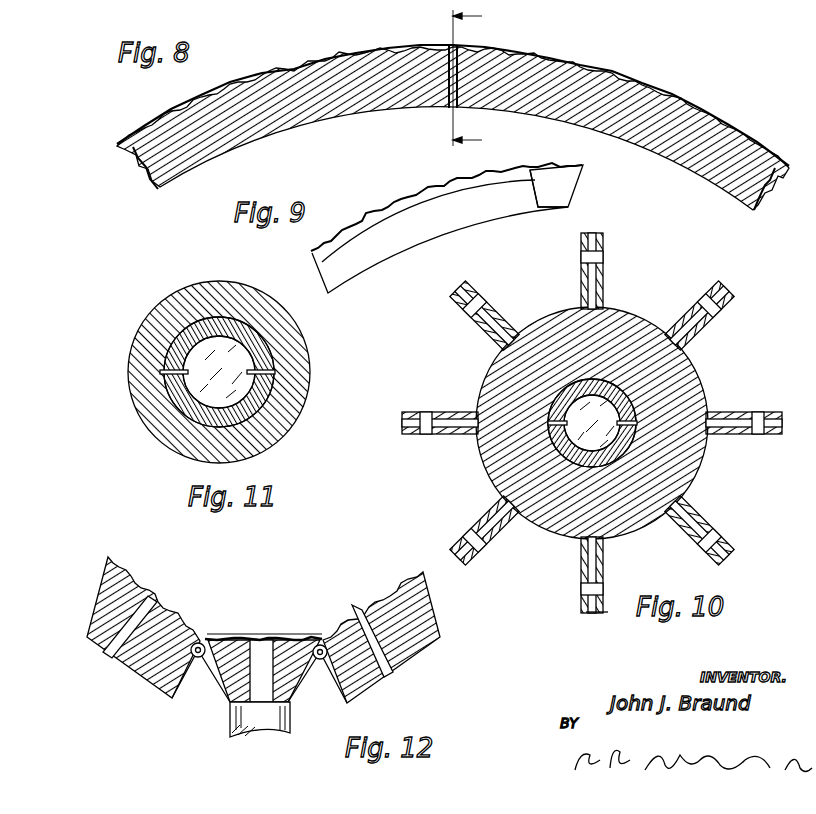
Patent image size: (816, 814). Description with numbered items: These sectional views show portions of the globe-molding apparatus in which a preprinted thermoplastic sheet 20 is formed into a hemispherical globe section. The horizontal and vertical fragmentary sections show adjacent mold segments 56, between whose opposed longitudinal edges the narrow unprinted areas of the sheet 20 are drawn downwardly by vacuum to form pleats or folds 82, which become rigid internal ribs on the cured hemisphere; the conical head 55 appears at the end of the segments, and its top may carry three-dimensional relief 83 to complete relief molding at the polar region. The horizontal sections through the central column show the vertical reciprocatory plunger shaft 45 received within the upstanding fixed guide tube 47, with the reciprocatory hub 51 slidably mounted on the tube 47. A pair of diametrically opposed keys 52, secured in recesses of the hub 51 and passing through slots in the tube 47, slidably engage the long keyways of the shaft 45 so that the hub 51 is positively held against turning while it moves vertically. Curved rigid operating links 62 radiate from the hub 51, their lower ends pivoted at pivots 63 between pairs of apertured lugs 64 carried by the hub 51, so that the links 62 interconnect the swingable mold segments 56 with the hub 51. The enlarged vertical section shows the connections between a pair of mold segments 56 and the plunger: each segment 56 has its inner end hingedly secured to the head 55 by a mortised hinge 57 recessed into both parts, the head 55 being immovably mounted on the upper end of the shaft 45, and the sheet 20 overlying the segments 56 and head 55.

In FIG. 8, the sheet of thermoplastic material 20 is at (653, 86).
In FIG. 12, the sheet of thermoplastic material 20 is at (263, 636).
In FIG. 11, the plunger rod or shaft 45 is at (273, 347).
In FIG. 10, the plunger rod or shaft 45 is at (622, 405).
In FIG. 12, the plunger rod or shaft 45 is at (276, 737).
In FIG. 11, the tube 47 is at (262, 403).
In FIG. 10, the tube 47 is at (610, 381).
In FIG. 11, the hub 51 is at (152, 432).
In FIG. 10, the hub 51 is at (672, 456).
In FIG. 11, the keys 52 is at (245, 373).
In FIG. 10, the keys 52 is at (545, 428).
In FIG. 9, the conical head or block 55 is at (568, 187).
In FIG. 8, the mold segments 56 is at (278, 130).
In FIG. 9, the mold segments 56 is at (480, 203).
In FIG. 12, the mold segments 56 is at (100, 650).
In FIG. 12, the mortised hinge 57 is at (200, 663).
In FIG. 10, the operating link 62 is at (608, 279).
In FIG. 10, the pivot 63 is at (472, 302).
In FIG. 10, the apertured lugs 64 is at (577, 602).
In FIG. 8, the pleats or folds 82 is at (458, 72).
In FIG. 9, the pleats or folds 82 is at (370, 228).
In FIG. 12, the three-dimensional relief 83 is at (240, 632).